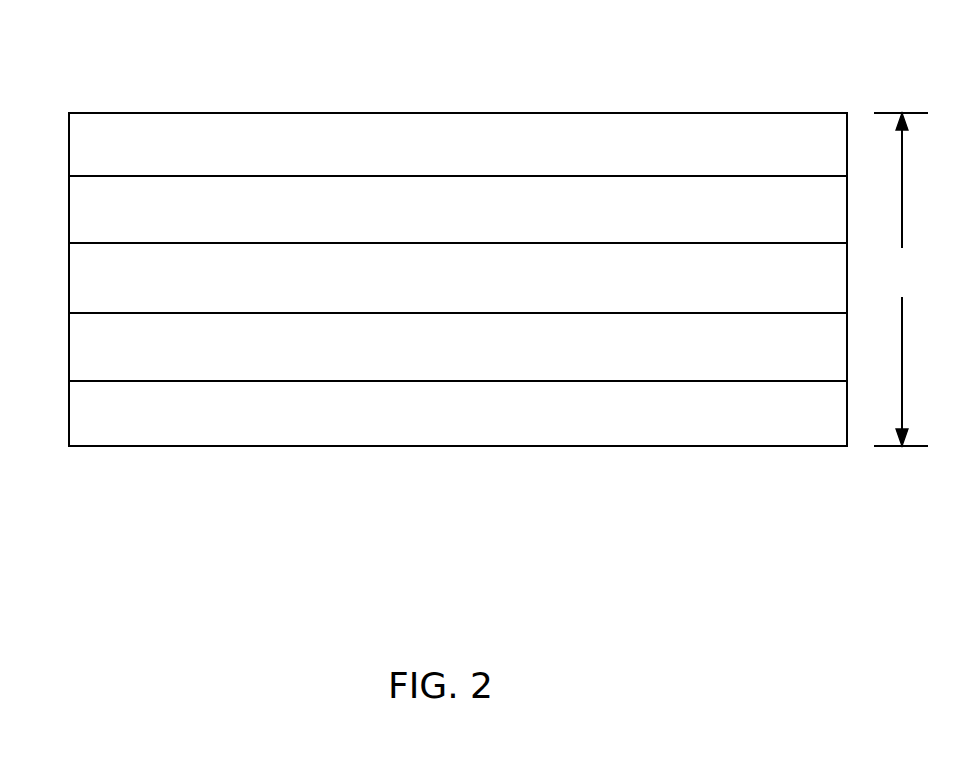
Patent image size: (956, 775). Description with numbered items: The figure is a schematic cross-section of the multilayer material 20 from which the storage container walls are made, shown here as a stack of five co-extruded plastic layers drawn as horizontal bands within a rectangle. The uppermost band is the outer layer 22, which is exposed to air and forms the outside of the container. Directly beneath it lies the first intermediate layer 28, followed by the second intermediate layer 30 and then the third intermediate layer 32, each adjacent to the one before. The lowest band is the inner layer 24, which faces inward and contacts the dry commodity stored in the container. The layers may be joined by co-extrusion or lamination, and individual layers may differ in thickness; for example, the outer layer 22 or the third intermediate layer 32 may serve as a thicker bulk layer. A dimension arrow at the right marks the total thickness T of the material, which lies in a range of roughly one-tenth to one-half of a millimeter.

The multilayer material 20 is at (643, 84).
The outer layer 22 is at (69, 163).
The first intermediate layer 28 is at (69, 218).
The second intermediate layer 30 is at (69, 286).
The third intermediate layer 32 is at (69, 353).
The inner layer 24 is at (69, 423).
The total thickness T is at (901, 279).